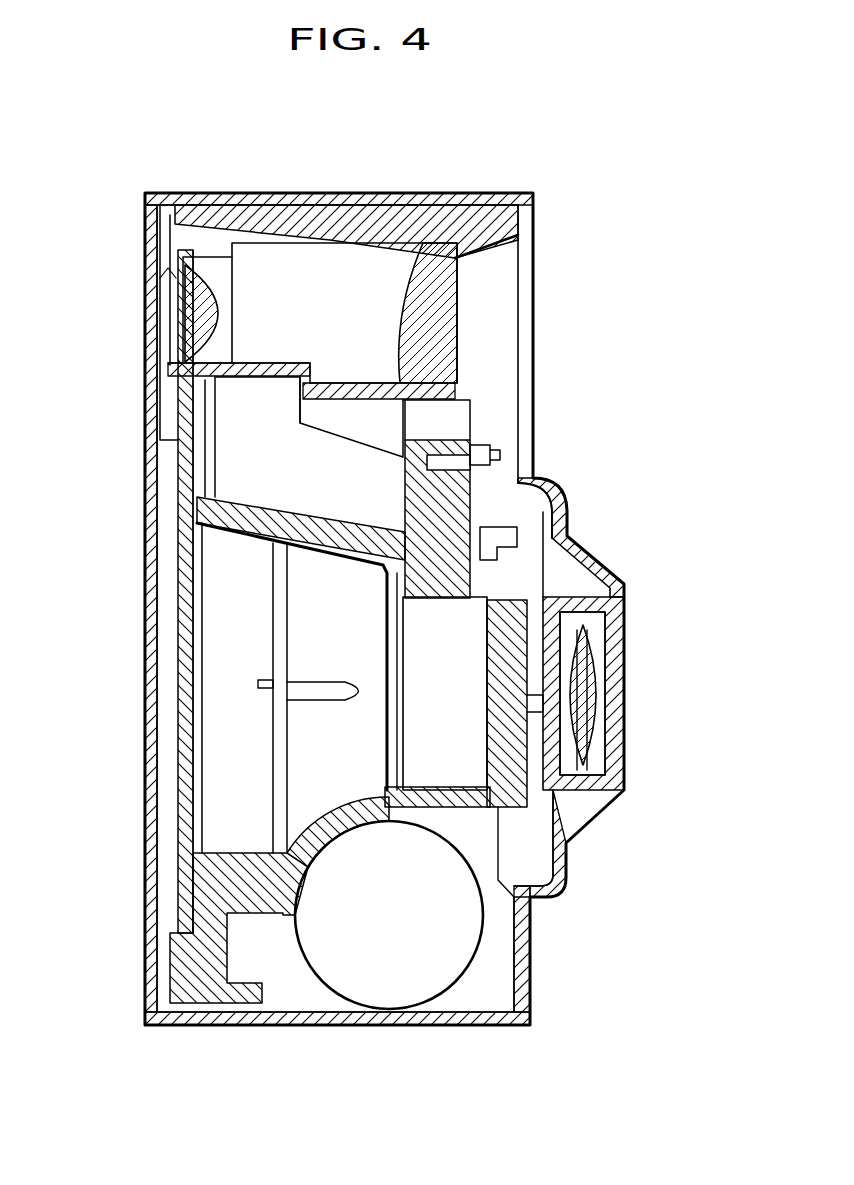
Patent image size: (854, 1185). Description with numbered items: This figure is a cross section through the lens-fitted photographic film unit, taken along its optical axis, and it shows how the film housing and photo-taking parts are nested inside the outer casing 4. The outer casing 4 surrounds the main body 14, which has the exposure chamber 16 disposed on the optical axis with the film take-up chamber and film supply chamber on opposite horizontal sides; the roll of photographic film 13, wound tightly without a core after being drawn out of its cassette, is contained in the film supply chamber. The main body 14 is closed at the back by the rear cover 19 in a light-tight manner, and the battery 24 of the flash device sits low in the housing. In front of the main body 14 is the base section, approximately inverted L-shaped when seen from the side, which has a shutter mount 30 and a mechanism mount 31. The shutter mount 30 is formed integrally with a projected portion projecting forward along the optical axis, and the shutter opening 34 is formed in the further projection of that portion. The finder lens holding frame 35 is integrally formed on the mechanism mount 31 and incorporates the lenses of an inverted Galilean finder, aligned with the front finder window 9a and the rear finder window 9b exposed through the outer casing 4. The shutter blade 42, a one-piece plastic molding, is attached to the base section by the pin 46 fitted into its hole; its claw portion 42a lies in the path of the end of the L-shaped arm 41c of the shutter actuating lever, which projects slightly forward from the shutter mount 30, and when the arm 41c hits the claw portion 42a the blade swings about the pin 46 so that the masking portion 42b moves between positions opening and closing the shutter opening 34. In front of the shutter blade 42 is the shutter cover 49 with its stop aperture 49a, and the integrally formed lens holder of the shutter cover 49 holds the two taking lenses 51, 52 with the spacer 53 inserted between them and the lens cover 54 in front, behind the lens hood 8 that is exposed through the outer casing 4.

The outer casing 4 is at (246, 192).
The lens hood 8 is at (597, 572).
The front finder window 9a is at (500, 242).
The rear finder window 9b is at (162, 282).
The photographic film 13 is at (187, 600).
The main body 14 is at (255, 505).
The exposure chamber 16 is at (222, 660).
The rear cover 19 is at (175, 734).
The battery 24 is at (412, 933).
The shutter mount 30 is at (440, 565).
The mechanism mount 31 is at (495, 720).
The shutter opening 34 is at (215, 306).
The finder lens holding frame 35 is at (423, 323).
The L-shaped arm 41c is at (440, 445).
The shutter blade 42 is at (478, 500).
The claw portion 42a is at (523, 413).
The masking portion 42b is at (517, 680).
The pin 46 is at (548, 512).
The shutter cover 49 is at (547, 547).
The stop aperture 49a is at (540, 703).
The taking lens 51 is at (600, 745).
The taking lens 52 is at (600, 684).
The spacer 53 is at (607, 713).
The lens cover 54 is at (613, 608).